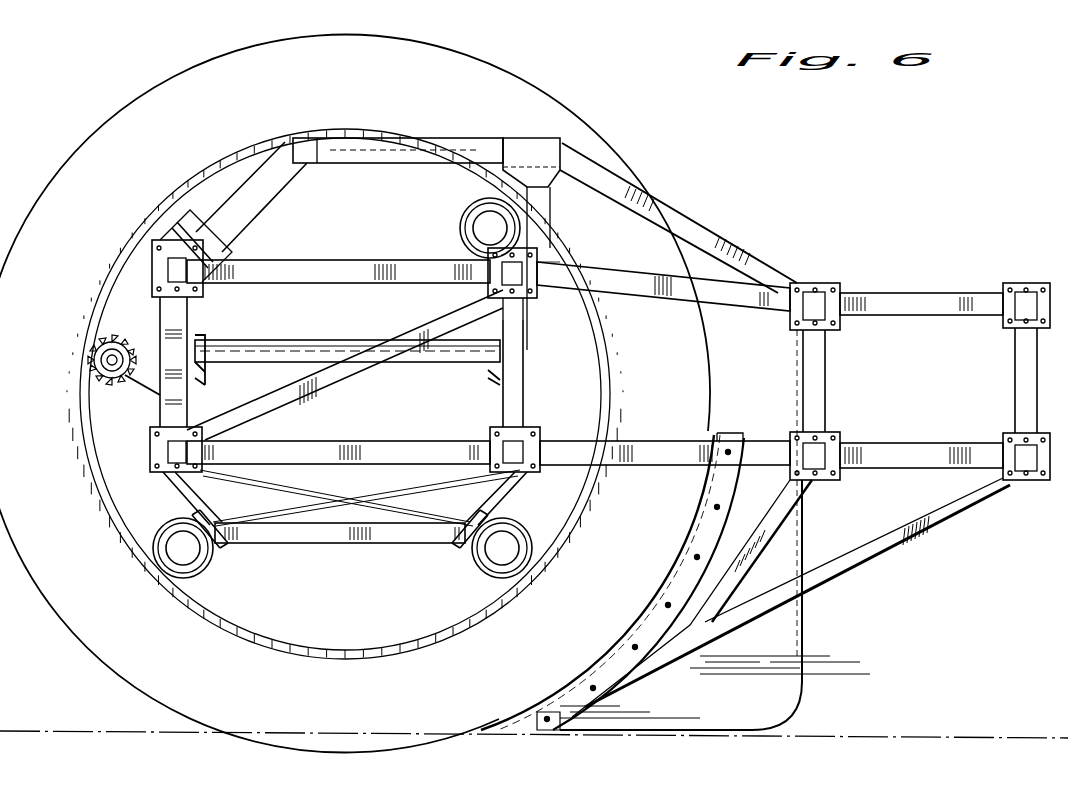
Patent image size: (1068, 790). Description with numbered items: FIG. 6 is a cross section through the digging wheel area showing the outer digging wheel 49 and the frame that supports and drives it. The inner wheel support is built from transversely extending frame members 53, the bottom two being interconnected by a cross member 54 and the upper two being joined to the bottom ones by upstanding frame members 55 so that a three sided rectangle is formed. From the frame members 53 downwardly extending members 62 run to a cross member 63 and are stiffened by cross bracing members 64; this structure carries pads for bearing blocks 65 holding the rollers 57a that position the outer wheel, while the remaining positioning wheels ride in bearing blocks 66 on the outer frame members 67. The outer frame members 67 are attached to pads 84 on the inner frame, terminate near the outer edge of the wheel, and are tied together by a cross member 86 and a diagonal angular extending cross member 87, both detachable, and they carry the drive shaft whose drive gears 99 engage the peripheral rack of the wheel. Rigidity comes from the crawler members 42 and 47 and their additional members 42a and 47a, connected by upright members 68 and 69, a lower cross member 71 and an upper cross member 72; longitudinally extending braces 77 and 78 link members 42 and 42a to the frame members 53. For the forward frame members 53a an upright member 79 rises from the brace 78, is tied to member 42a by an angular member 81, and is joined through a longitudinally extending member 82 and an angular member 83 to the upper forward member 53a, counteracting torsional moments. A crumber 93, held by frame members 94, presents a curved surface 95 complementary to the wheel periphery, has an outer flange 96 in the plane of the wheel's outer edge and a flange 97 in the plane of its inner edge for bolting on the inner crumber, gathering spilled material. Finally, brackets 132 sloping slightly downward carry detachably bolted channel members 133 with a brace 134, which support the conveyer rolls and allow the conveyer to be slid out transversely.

The crawler member 42 is at (820, 445).
The additional crawler member 42a is at (828, 333).
The crawler member 47 is at (1020, 462).
The additional crawler member 47a is at (1025, 318).
The outer digging wheel 49 is at (582, 130).
The frame member 53 is at (525, 298).
The forward frame member 53a is at (172, 272).
The cross member 54 is at (400, 443).
The upstanding frame member 55 is at (190, 326).
The roller 57a is at (186, 552).
The downwardly extending member 62 is at (192, 500).
The cross member 63 is at (332, 540).
The cross bracing member 64 is at (305, 490).
The bearing block 65 is at (222, 545).
The bearing block 66 is at (480, 255).
The outer frame member 67 is at (540, 284).
The upright member 68 is at (813, 385).
The upright member 69 is at (1015, 385).
The cross member 71 is at (918, 445).
The cross member 72 is at (945, 274).
The longitudinally extending brace 77 is at (655, 440).
The longitudinally extending brace 78 is at (648, 270).
The upright member 79 is at (548, 196).
The angular member 81 is at (738, 217).
The longitudinally extending member 82 is at (470, 138).
The angular member 83 is at (235, 215).
The pad 84 is at (503, 304).
The cross member 86 is at (358, 247).
The angular extending cross member 87 is at (300, 385).
The crumber 93 is at (566, 718).
The frame member 94 is at (922, 535).
The curved surface 95 is at (690, 530).
The outer flange 96 is at (790, 652).
The flange 97 is at (676, 575).
The drive gear 99 is at (92, 358).
The bracket 132 is at (205, 388).
The channel member 133 is at (210, 340).
The brace 134 is at (330, 346).